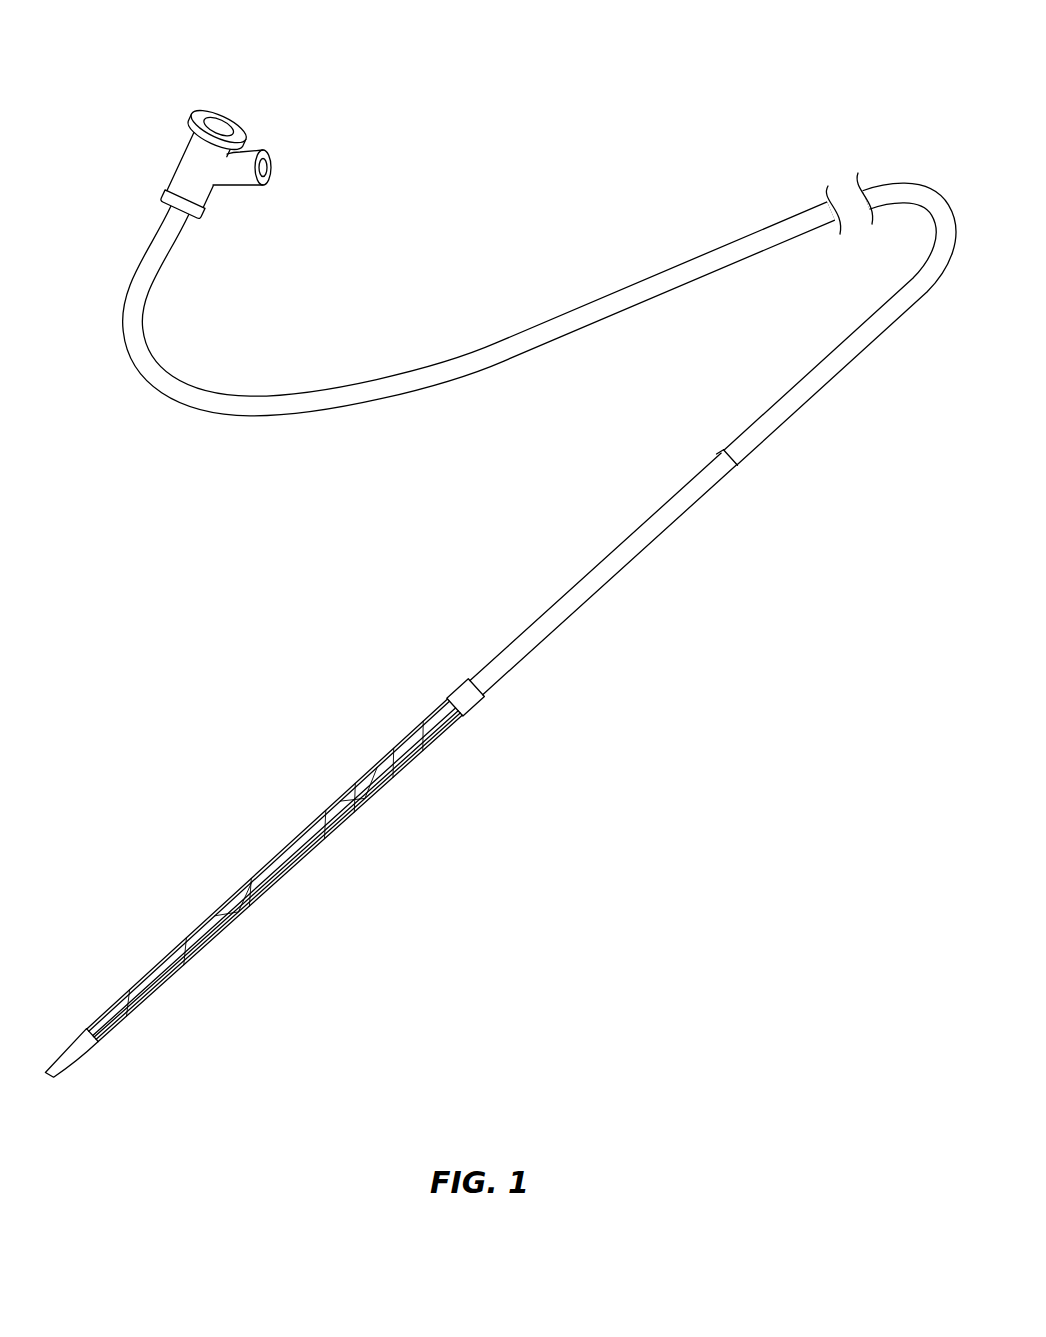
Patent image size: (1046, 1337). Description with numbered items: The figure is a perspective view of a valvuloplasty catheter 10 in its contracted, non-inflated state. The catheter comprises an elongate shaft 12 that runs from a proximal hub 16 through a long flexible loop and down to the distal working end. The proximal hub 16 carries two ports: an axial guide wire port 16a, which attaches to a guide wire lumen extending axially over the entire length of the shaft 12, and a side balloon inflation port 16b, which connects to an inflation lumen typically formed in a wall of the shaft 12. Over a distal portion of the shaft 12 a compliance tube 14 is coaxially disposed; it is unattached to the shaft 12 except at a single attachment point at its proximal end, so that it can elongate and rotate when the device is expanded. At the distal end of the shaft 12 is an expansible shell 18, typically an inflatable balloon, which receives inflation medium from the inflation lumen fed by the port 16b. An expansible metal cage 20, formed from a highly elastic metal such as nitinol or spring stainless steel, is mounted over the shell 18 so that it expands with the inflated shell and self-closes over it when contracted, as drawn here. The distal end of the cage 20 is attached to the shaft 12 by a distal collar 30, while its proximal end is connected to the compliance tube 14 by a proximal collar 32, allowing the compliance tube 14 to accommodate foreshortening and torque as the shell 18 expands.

The valvuloplasty catheter 10 is at (568, 124).
The shaft 12 is at (788, 407).
The compliance tube 14 is at (590, 595).
The proximal hub 16 is at (187, 177).
The axial guide wire port 16a is at (221, 118).
The side balloon inflation port 16b is at (275, 164).
The expansible shell 18 is at (272, 875).
The expansible metal cage 20 is at (262, 800).
The distal collar 30 is at (83, 1048).
The proximal collar 32 is at (463, 703).